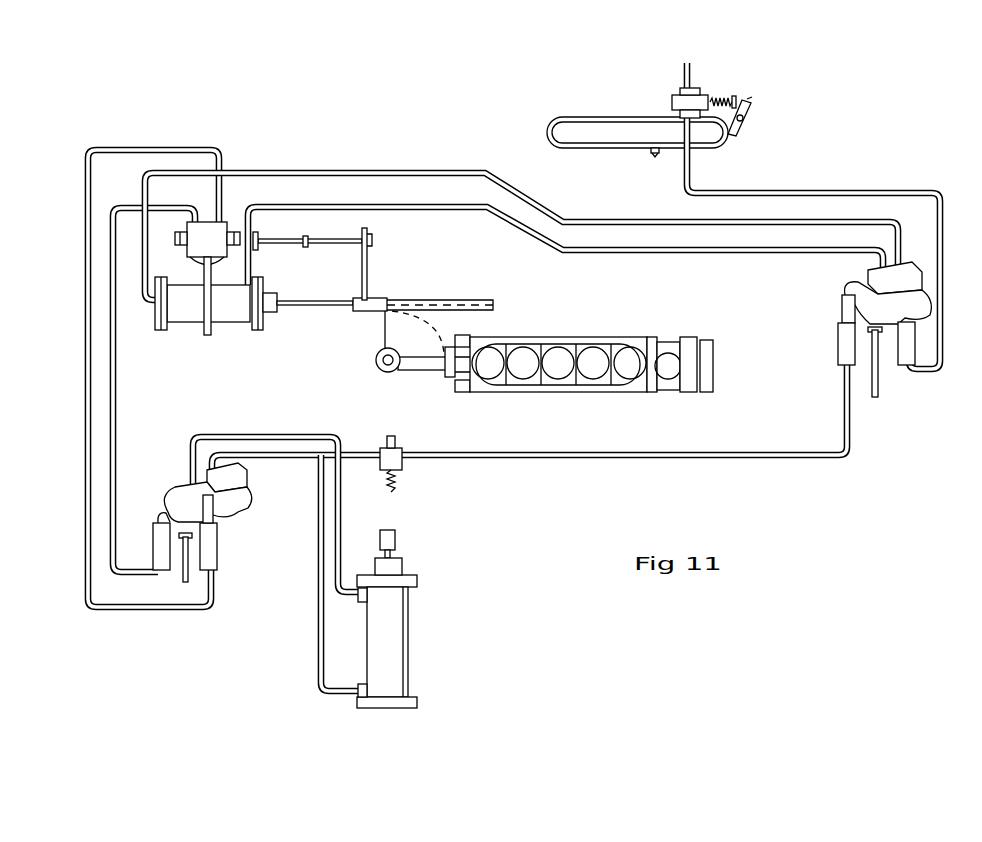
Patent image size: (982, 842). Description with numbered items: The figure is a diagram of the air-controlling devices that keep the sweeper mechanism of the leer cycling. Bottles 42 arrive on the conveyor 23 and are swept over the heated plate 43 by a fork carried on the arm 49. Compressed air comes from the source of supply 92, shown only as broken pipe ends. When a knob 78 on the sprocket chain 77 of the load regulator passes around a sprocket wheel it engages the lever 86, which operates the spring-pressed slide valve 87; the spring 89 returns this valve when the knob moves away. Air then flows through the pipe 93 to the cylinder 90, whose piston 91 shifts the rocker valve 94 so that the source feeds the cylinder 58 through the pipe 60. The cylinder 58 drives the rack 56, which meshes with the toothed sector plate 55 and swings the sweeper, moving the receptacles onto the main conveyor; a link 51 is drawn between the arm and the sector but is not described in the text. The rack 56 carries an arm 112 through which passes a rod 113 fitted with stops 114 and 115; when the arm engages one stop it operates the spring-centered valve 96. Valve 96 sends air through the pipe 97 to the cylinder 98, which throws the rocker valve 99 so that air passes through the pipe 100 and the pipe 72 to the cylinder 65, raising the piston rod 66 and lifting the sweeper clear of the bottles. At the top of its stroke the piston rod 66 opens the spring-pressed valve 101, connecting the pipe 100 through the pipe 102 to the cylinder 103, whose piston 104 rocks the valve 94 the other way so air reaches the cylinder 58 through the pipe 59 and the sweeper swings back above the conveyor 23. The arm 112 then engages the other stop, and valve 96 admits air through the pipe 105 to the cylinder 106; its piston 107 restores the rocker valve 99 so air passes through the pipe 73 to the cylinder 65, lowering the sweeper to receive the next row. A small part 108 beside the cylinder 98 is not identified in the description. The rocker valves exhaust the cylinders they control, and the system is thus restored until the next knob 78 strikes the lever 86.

The conveyor 23 is at (713, 375).
The bottles 42 is at (557, 380).
The plate 43 is at (539, 333).
The arm 49 is at (387, 373).
The link 51 is at (450, 378).
The sector plate 55 is at (419, 371).
The rack 56 is at (396, 299).
The cylinder 58 is at (234, 323).
The pipe 59 is at (380, 170).
The pipe 60 is at (352, 206).
The cylinder 65 is at (398, 643).
The piston rod 66 is at (401, 554).
The pipe 72 is at (318, 617).
The pipe 73 is at (191, 450).
The sprocket chain 77 is at (609, 149).
The knobs 78 is at (655, 157).
The lever 86 is at (749, 127).
The valve 87 is at (693, 100).
The spring 89 is at (730, 98).
The cylinder 90 is at (910, 345).
The piston 91 is at (912, 318).
The source of supply 92 is at (692, 77).
The pipe 93 is at (800, 190).
The rocker valve 94 is at (866, 278).
The valve 96 is at (196, 258).
The pipe 97 is at (171, 207).
The cylinder 98 is at (153, 548).
The rocker valve 99 is at (249, 492).
The pipe 100 is at (277, 458).
The valve 101 is at (401, 454).
The pipe 102 is at (845, 383).
The cylinder 103 is at (838, 338).
The piston 104 is at (842, 308).
The pipe 105 is at (222, 190).
The cylinder 106 is at (217, 549).
The piston 107 is at (214, 514).
The valve 108 is at (159, 514).
The arm 112 is at (367, 262).
The rod 113 is at (330, 239).
The stop 114 is at (305, 247).
The stop 115 is at (373, 238).